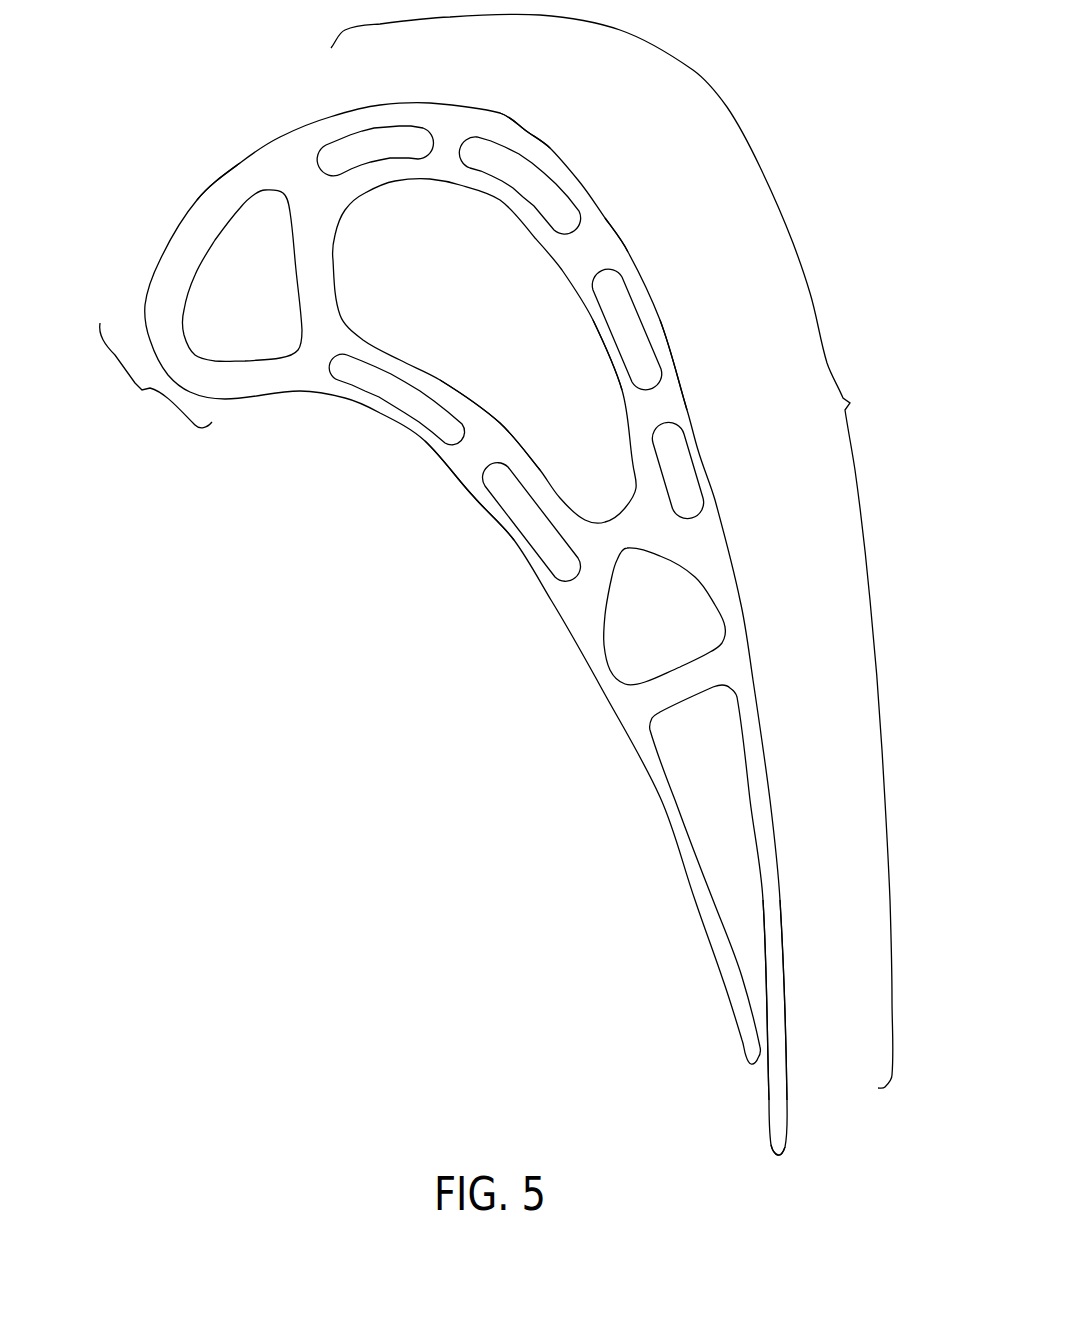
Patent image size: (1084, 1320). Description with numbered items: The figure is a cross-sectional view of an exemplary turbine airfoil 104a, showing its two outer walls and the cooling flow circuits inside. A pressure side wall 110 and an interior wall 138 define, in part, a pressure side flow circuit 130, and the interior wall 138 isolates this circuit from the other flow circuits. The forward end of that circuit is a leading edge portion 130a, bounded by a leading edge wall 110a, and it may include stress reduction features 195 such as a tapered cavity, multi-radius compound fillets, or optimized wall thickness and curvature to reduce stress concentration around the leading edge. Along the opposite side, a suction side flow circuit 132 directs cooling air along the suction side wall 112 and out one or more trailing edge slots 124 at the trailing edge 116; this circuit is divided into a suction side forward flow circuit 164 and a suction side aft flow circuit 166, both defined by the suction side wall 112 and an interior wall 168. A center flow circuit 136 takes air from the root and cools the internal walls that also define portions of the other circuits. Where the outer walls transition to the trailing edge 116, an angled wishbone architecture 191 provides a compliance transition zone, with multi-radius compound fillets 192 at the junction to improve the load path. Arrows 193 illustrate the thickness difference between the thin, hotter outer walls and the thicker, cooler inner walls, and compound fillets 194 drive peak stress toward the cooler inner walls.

The airfoil 104a is at (487, 639).
The pressure side wall 110 is at (477, 494).
The leading edge wall 110a is at (147, 375).
The suction side wall 112 is at (660, 337).
The trailing edge 116 is at (772, 1162).
The trailing edge slots 124 is at (767, 1118).
The pressure side flow circuit 130 is at (407, 397).
The leading edge portion 130a is at (216, 275).
The suction side flow circuit 132 is at (613, 551).
The center flow circuit 136 is at (419, 291).
The interior wall 138 is at (493, 433).
The suction side forward flow circuit 164 is at (373, 134).
The suction side aft flow circuit 166 is at (617, 302).
The interior wall 168 is at (607, 347).
The wishbone architecture 191 is at (648, 599).
The multi-radius compound fillets 192 is at (624, 501).
The arrows 193 is at (567, 160).
The multi-radius compound fillets 194 is at (692, 295).
The stress reduction features 195 is at (247, 404).